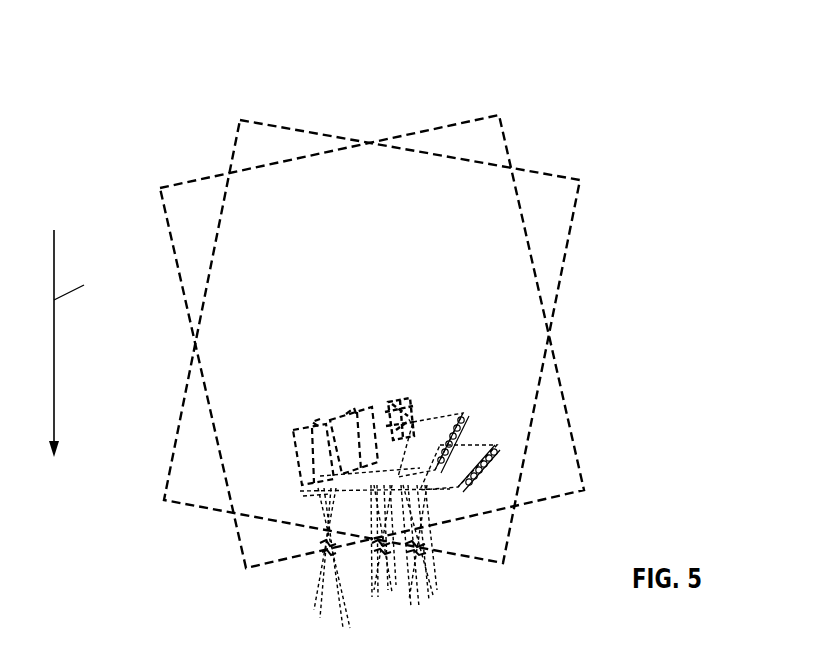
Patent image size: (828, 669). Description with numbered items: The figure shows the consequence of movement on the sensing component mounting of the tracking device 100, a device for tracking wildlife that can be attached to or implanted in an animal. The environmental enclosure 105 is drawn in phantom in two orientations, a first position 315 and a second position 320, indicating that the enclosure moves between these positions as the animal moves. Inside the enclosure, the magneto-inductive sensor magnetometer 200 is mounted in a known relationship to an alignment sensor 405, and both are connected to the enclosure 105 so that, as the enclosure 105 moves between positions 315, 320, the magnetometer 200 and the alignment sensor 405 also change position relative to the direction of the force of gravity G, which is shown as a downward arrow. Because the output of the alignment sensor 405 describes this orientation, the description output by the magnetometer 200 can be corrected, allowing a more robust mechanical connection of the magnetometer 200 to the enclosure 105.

The tracking device 100 is at (644, 64).
The environmental enclosure 105 is at (372, 331).
The position 315 is at (478, 121).
The position 320 is at (575, 213).
The alignment sensor 405 is at (311, 422).
The magneto-inductive sensor magnetometer 200 is at (412, 394).